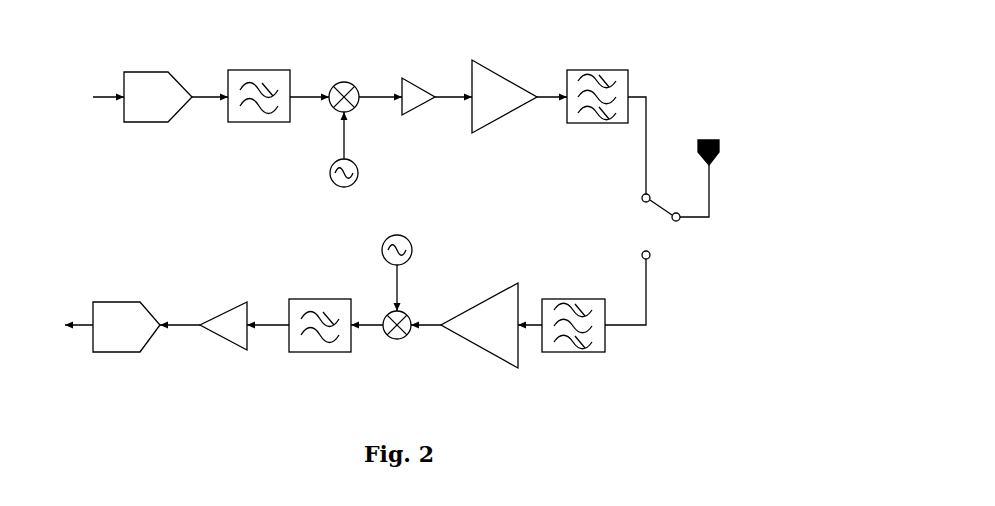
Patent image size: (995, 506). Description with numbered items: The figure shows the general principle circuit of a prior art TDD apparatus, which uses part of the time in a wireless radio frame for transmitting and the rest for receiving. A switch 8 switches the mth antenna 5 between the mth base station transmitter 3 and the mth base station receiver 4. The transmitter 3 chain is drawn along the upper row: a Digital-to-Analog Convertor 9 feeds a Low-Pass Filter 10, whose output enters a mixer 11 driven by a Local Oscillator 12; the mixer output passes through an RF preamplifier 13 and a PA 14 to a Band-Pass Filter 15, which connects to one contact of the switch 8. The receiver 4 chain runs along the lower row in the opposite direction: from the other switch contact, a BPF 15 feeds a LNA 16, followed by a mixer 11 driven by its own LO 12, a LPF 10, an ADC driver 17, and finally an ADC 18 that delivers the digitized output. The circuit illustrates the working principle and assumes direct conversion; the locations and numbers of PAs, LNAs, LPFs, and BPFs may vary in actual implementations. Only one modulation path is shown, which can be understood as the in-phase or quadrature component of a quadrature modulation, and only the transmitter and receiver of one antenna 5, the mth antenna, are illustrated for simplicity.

The transmitter m 3 is at (116, 77).
The Digital-to-Analog Convertor (DAC) 9 is at (158, 97).
The Low-Pass Filter (LPF) 10 is at (289, 212).
The mixer 11 is at (371, 210).
The Local Oscillator (LO) 12 is at (370, 211).
The RF preamplifier 13 is at (423, 63).
The PA 14 is at (504, 96).
The Band-Pass Filter (BPF) 15 is at (585, 212).
The switch 8 is at (663, 213).
The antenna m 5 is at (721, 203).
The LNA 16 is at (479, 325).
The ADC driver 17 is at (220, 360).
The ADC 18 is at (126, 327).
The receiver m 4 is at (103, 351).